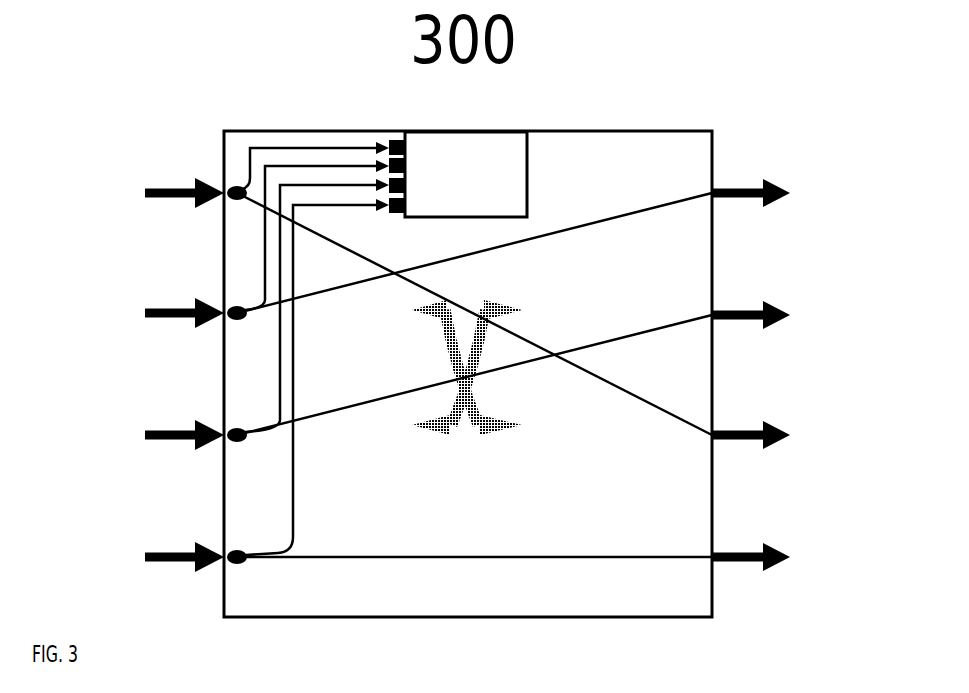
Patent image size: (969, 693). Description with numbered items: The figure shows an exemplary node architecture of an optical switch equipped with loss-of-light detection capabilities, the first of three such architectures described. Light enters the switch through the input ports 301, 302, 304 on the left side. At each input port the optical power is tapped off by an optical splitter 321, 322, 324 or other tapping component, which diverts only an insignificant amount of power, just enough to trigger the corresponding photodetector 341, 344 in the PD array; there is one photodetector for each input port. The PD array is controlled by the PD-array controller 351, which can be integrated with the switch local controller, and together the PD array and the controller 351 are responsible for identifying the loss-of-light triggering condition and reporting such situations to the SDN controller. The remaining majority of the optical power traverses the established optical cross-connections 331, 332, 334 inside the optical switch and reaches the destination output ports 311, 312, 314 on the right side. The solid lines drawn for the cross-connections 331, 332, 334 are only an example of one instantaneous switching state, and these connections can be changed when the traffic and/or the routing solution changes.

The input port 301 is at (150, 185).
The input port 302 is at (150, 305).
The input port 304 is at (152, 548).
The output port 311 is at (778, 183).
The output port 312 is at (778, 304).
The output port 314 is at (778, 546).
The optical splitter 321 is at (238, 184).
The optical splitter 322 is at (238, 304).
The optical splitter 324 is at (240, 548).
The optical cross-connection 331 is at (577, 233).
The optical cross-connection 332 is at (605, 378).
The optical cross-connection 334 is at (585, 550).
The photodetector 341 is at (393, 140).
The photodetector 344 is at (395, 215).
The PD-array controller 351 is at (530, 148).